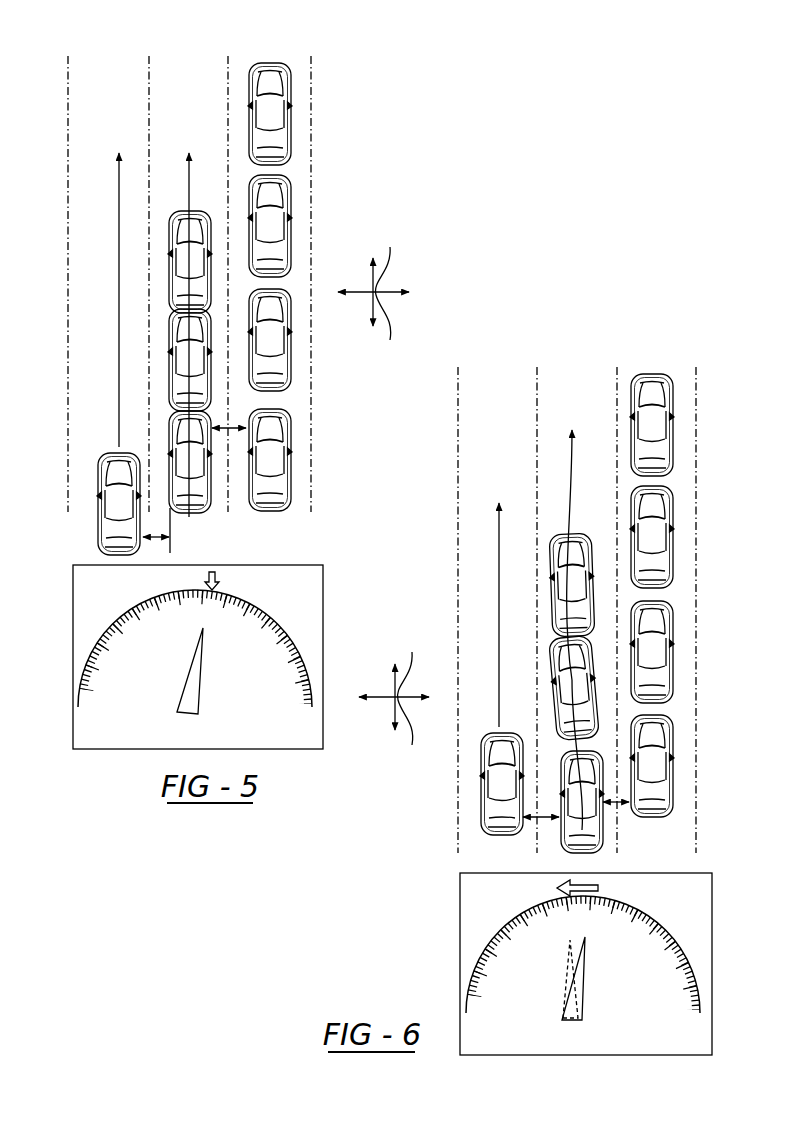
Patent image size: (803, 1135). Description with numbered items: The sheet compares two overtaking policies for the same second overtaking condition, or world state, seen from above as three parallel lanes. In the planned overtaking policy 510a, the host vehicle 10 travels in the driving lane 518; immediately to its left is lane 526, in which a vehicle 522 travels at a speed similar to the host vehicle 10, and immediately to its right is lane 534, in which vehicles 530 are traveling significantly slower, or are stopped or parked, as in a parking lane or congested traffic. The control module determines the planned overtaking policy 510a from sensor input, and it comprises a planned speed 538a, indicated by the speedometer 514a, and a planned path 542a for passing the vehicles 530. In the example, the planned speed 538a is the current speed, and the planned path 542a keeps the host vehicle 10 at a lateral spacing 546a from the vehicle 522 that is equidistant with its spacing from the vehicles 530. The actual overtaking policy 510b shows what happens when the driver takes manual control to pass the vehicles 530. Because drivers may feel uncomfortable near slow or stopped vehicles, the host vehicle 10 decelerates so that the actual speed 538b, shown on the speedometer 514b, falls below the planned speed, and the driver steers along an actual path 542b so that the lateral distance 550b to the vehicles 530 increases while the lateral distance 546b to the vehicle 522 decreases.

In FIG. 5, the planned overtaking policy 510a is at (338, 108).
In FIG. 6, the actual overtaking policy 510b is at (714, 375).
In FIG. 5, the lane 526 is at (75, 53).
In FIG. 6, the lane 526 is at (464, 363).
In FIG. 5, the driving lane 518 is at (155, 53).
In FIG. 6, the driving lane 518 is at (611, 363).
In FIG. 5, the lane 534 is at (235, 53).
In FIG. 6, the lane 534 is at (624, 363).
In FIG. 5, the planned path 542a is at (188, 225).
In FIG. 6, the actual path 542b is at (570, 497).
In FIG. 5, the vehicles 530 is at (268, 128).
In FIG. 6, the vehicles 530 is at (652, 442).
In FIG. 5, the host vehicle 10 is at (193, 484).
In FIG. 6, the host vehicle 10 is at (584, 820).
In FIG. 5, the vehicle 522 is at (110, 512).
In FIG. 6, the vehicle 522 is at (495, 798).
In FIG. 5, the lateral distance 550b is at (242, 427).
In FIG. 6, the lateral distance 550b is at (620, 808).
In FIG. 5, the lateral spacing 546a is at (152, 540).
In FIG. 6, the lateral distance 546b is at (540, 820).
In FIG. 5, the planned speed 538a is at (225, 580).
In FIG. 6, the actual speed 538b is at (580, 882).
In FIG. 5, the speedometer 514a is at (202, 673).
In FIG. 6, the speedometer 514b is at (558, 964).